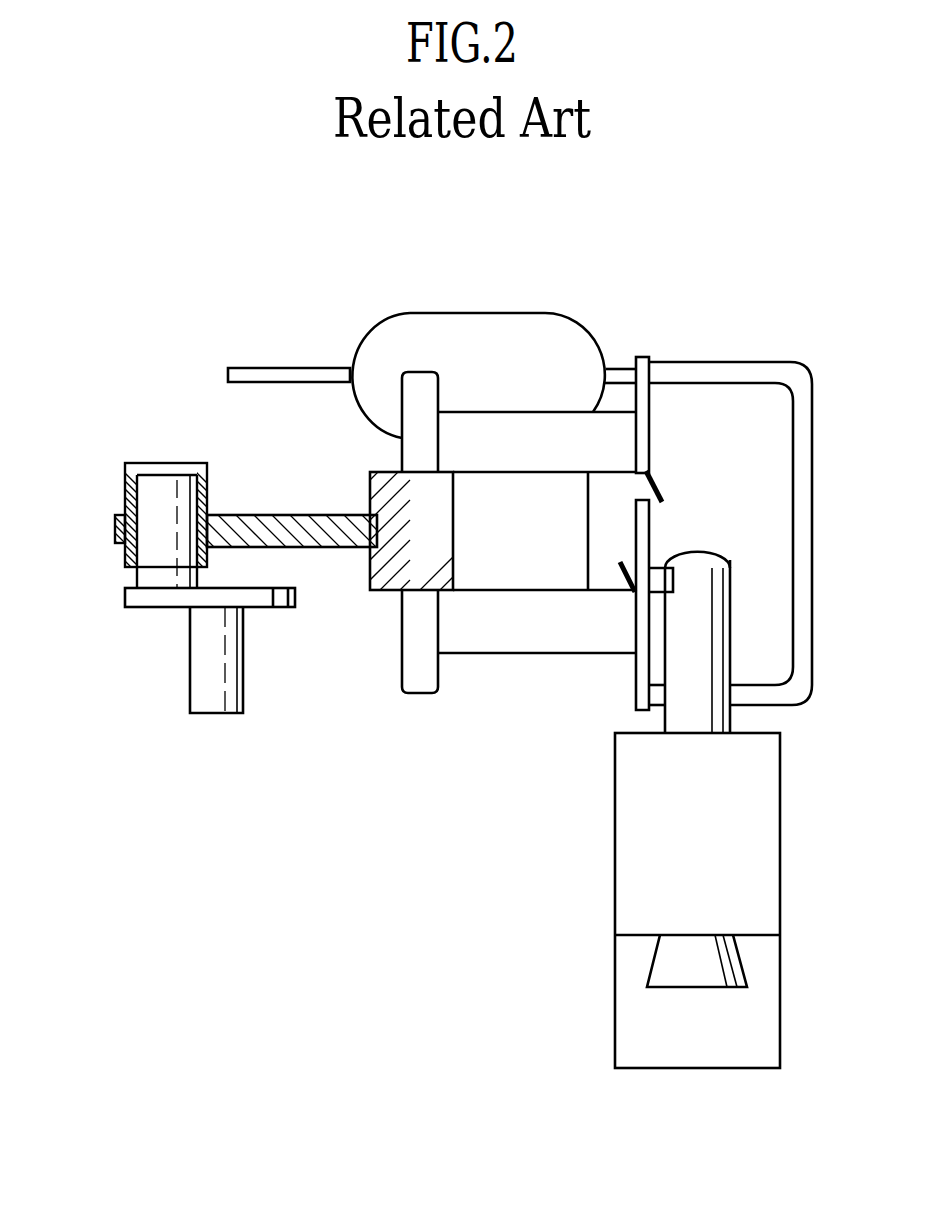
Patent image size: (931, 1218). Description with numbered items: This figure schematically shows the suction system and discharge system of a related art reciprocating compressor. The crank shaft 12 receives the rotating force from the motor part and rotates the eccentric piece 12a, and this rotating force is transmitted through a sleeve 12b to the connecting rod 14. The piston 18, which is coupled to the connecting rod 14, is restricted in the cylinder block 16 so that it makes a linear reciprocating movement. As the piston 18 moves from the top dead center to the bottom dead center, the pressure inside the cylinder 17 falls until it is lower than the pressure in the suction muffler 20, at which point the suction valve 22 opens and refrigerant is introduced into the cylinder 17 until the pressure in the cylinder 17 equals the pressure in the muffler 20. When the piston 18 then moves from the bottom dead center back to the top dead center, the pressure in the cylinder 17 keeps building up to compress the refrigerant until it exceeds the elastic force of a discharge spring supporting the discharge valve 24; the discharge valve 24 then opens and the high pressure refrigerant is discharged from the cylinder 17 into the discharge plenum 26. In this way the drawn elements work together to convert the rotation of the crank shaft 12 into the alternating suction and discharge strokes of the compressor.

The crank shaft 12 is at (192, 664).
The eccentric piece 12a is at (165, 484).
The sleeve 12b is at (126, 484).
The connecting rod 14 is at (275, 524).
The cylinder block 16 is at (460, 627).
The cylinder 17 is at (522, 402).
The piston 18 is at (383, 569).
The suction muffler 20 is at (770, 882).
The suction valve 22 is at (624, 572).
The discharge valve 24 is at (664, 490).
The discharge plenum 26 is at (757, 396).